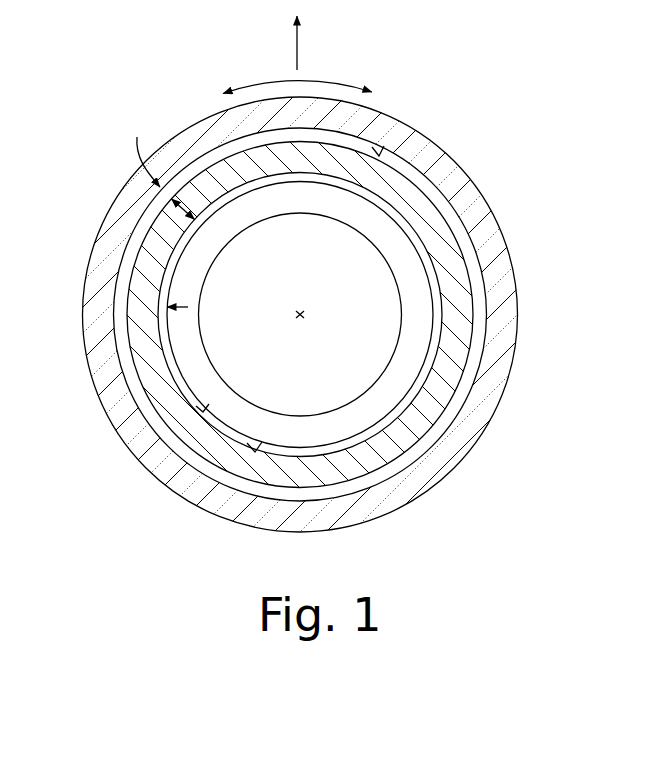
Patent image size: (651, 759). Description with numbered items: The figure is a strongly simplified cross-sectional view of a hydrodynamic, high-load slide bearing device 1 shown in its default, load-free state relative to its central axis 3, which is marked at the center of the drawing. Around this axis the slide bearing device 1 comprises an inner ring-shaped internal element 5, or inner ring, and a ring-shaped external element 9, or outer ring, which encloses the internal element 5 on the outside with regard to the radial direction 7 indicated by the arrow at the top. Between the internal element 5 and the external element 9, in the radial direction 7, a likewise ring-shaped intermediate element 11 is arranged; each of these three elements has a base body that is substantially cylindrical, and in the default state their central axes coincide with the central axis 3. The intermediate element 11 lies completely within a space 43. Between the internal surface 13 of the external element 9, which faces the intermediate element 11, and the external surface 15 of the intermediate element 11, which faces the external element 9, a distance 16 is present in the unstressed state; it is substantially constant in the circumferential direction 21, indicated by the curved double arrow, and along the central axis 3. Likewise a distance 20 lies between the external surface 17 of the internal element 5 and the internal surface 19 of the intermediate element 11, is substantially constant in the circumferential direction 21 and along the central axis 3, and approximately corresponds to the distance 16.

The slide bearing device 1 is at (98, 110).
The central axis 3 is at (307, 317).
The internal element 5 is at (412, 372).
The radial direction 7 is at (300, 43).
The external element 9 is at (470, 200).
The intermediate element 11 is at (463, 315).
The internal surface 13 is at (378, 150).
The external surface 15 is at (208, 168).
The distance 16 is at (138, 146).
The external surface 17 is at (200, 412).
The internal surface 19 is at (252, 447).
The distance 20 is at (156, 307).
The circumferential direction 21 is at (338, 82).
The space 43 is at (423, 180).